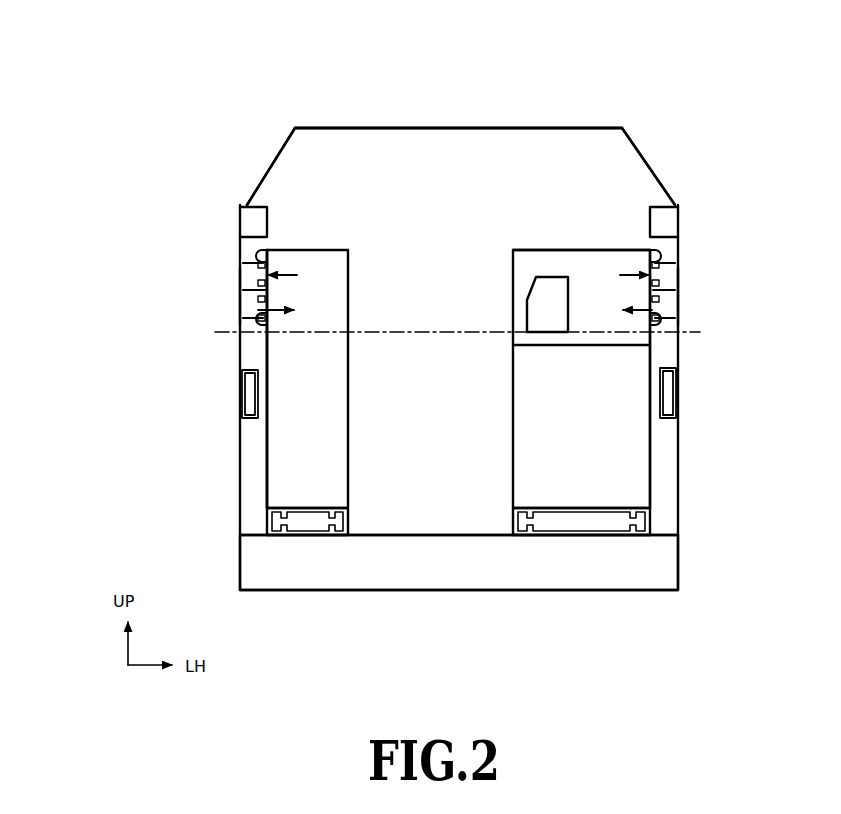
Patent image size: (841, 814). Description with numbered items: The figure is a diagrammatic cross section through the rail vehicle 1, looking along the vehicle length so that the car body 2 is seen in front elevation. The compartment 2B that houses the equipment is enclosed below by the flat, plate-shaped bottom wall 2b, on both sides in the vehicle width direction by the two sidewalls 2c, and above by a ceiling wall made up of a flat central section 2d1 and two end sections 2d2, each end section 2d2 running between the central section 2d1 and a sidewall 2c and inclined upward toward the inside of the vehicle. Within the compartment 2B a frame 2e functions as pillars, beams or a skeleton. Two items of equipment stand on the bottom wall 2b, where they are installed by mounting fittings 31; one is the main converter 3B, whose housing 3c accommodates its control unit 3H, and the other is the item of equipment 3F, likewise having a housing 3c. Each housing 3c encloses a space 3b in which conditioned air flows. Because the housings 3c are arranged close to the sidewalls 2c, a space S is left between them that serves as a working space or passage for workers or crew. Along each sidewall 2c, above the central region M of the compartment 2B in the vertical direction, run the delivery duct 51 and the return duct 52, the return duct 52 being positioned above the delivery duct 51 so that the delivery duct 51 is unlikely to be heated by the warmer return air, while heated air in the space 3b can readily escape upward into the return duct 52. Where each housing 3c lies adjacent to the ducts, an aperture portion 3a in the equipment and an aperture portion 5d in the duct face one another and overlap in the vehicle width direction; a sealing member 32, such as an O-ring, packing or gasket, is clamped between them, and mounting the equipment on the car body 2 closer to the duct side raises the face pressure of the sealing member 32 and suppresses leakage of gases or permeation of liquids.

The image forming apparatus 1 is at (692, 70).
The car body 2 is at (626, 124).
The compartment 2B is at (380, 158).
The wall 2b is at (395, 590).
The walls 2c is at (240, 427).
The central section 2d1 is at (415, 128).
The end section 2d2 is at (261, 175).
The frame 2e is at (248, 205).
The front panel 3F is at (327, 248).
The main converter 3B is at (578, 248).
The control unit 3H is at (550, 290).
The aperture portion 3a is at (258, 254).
The space 3b is at (302, 265).
The housing 3c is at (537, 250).
The aperture portion 5d is at (252, 278).
The delivery duct 51 is at (236, 308).
The return duct 52 is at (236, 282).
The mounting fittings 31 is at (267, 590).
The sealing member 32 is at (255, 263).
The central region M is at (435, 335).
The space S is at (435, 515).